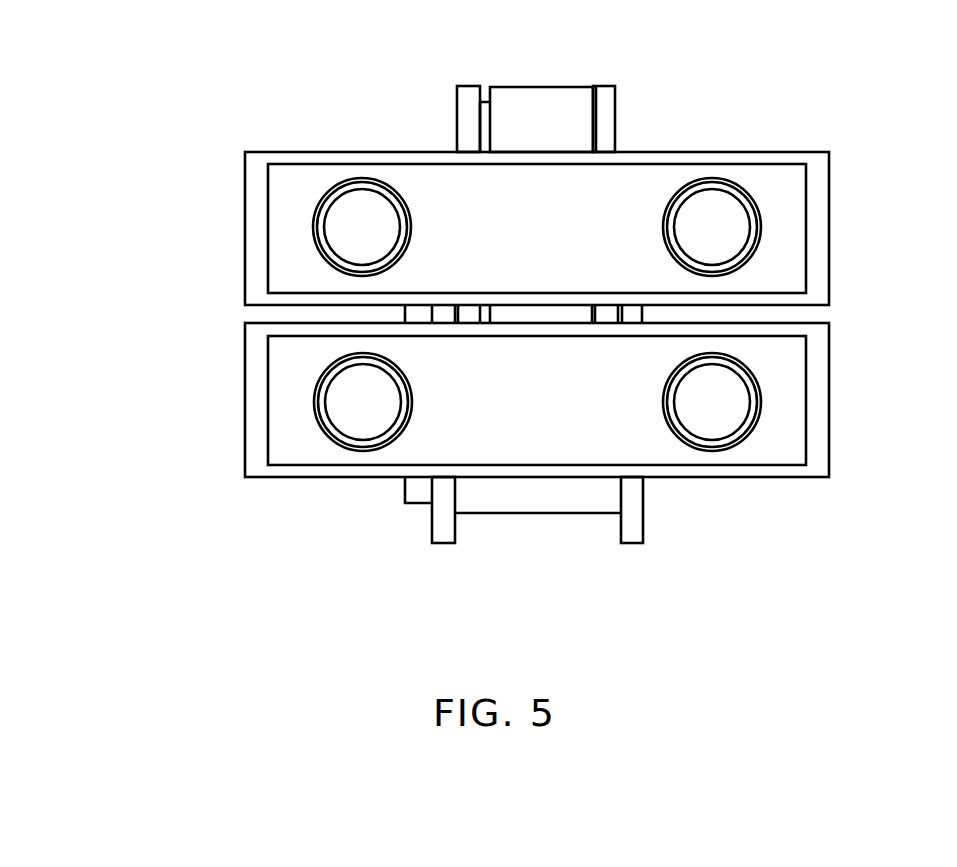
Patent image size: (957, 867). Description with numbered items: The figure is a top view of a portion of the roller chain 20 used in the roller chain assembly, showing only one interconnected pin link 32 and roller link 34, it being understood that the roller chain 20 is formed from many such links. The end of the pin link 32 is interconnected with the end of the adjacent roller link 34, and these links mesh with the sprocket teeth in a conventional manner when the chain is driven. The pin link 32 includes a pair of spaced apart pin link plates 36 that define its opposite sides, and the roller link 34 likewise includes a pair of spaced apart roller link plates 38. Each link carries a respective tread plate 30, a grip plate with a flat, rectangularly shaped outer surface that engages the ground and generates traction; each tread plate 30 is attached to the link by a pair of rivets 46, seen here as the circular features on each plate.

The roller chain 20 is at (906, 114).
The tread plate 30 is at (303, 178).
The pin link 32 is at (648, 529).
The roller link 34 is at (618, 108).
The pin link plate 36 is at (432, 530).
The roller link plate 38 is at (457, 108).
The rivet 46 is at (317, 232).